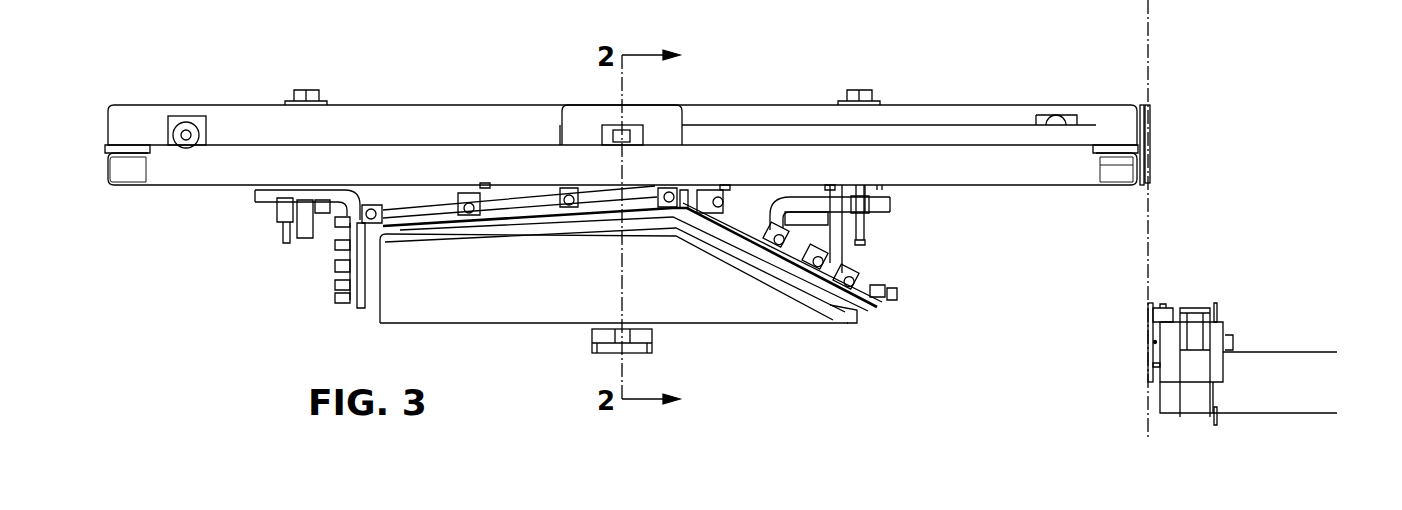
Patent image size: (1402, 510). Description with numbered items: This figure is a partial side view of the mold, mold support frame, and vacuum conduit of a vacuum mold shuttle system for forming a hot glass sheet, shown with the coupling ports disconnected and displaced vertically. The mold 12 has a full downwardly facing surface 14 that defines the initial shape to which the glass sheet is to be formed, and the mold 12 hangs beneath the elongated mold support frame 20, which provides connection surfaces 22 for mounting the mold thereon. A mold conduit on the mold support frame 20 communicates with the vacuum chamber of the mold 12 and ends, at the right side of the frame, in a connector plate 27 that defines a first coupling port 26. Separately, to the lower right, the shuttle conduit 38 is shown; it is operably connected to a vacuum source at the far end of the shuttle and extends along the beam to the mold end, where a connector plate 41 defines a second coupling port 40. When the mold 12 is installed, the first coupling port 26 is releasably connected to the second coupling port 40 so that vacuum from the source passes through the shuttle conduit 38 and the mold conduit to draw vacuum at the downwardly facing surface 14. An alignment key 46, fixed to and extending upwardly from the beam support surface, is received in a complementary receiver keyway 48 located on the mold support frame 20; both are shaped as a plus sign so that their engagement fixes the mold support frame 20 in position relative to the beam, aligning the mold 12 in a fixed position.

The mold 12 is at (822, 290).
The downwardly facing surface 14 is at (543, 284).
The mold support frame 20 is at (912, 166).
The connection surface 22 is at (300, 110).
The first coupling port 26 is at (1150, 148).
The connector plate 27 is at (1146, 113).
The shuttle conduit 38 is at (1273, 367).
The second coupling port 40 is at (1147, 347).
The connector plate 41 is at (1147, 321).
The alignment key 46 is at (633, 350).
The receiver keyway 48 is at (630, 137).